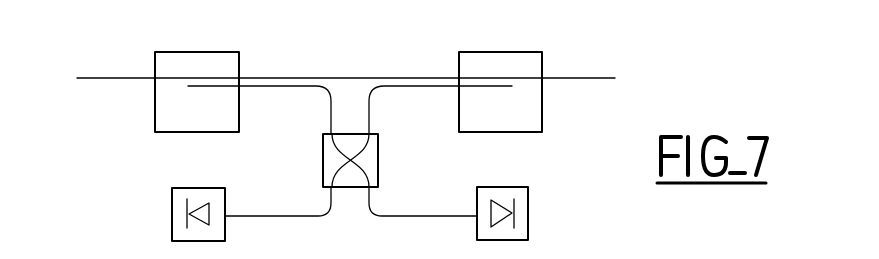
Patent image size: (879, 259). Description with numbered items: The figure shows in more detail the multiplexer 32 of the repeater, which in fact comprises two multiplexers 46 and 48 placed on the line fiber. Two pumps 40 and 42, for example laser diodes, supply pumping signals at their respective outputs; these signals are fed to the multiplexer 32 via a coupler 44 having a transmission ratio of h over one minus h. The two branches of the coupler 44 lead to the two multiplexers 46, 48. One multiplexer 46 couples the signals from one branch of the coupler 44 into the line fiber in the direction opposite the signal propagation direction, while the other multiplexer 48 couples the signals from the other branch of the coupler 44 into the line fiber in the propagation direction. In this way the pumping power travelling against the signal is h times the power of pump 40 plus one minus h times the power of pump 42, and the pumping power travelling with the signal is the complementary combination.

The multiplexer 32 is at (118, 60).
The pump 40 is at (172, 194).
The pump 42 is at (528, 195).
The coupler 44 is at (380, 158).
The multiplexer 46 is at (192, 52).
The multiplexer 48 is at (500, 52).